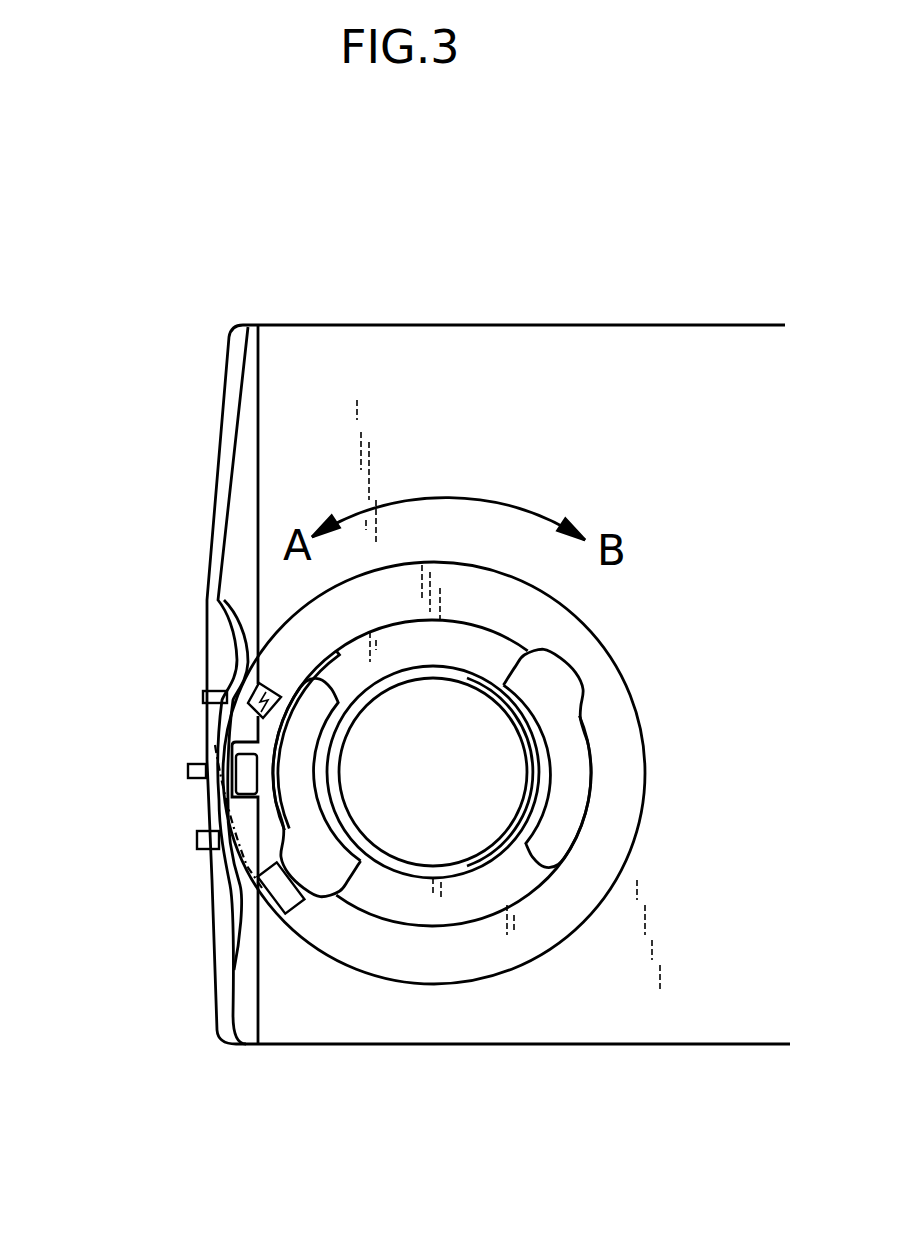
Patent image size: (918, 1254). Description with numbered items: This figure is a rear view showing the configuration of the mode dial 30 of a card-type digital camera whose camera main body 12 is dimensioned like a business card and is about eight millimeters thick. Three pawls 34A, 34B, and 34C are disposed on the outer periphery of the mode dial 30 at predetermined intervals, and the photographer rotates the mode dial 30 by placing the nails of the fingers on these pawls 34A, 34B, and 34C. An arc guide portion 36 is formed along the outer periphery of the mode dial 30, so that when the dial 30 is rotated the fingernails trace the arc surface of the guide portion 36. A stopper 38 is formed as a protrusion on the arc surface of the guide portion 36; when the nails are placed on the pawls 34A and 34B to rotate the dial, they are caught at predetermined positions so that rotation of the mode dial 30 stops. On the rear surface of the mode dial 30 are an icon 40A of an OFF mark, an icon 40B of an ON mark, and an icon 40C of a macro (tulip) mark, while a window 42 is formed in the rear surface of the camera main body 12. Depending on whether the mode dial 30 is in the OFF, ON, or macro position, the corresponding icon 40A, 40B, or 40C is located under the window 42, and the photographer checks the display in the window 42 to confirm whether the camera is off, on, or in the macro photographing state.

The camera main body 12 is at (385, 362).
The mode dial 30 is at (412, 948).
The pawl 34A is at (205, 826).
The pawl 34B is at (188, 771).
The pawl 34C is at (203, 696).
The arc guide portion 36 is at (186, 646).
The stopper 38 is at (222, 848).
The icon of an OFF mark 40A is at (302, 906).
The icon of an ON mark 40B is at (237, 779).
The icon of a macro mark 40C is at (257, 707).
The window 42 is at (198, 845).